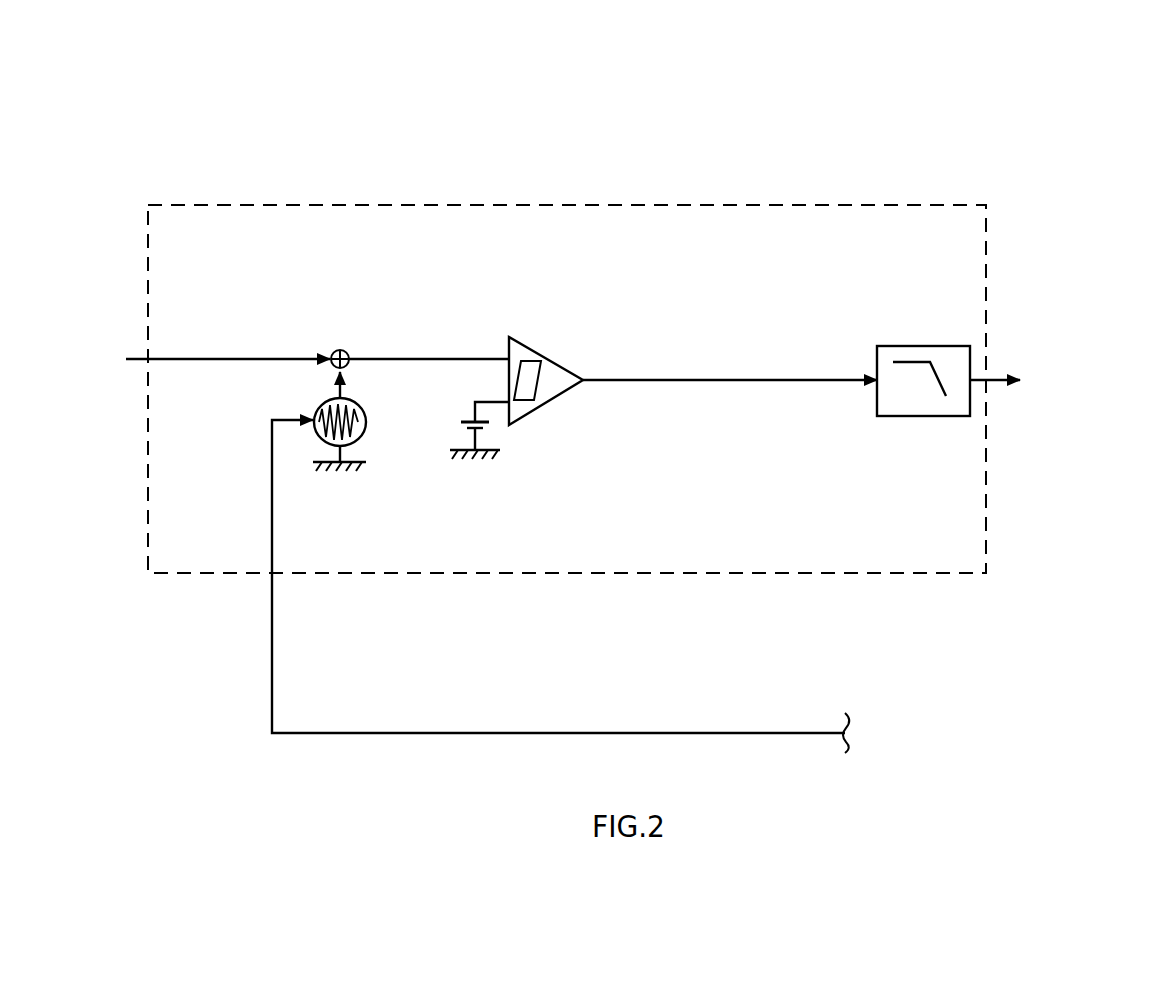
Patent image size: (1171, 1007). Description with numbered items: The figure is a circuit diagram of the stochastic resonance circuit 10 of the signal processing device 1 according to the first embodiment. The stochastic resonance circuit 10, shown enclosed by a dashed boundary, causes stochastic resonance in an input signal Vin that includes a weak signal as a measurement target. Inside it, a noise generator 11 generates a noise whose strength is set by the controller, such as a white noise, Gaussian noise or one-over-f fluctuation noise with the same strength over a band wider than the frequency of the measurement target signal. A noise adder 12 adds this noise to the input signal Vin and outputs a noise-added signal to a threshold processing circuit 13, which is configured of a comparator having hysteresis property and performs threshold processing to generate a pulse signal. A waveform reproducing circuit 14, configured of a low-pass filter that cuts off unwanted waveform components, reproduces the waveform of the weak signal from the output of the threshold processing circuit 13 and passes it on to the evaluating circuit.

The signal processing device 1 is at (1135, 74).
The stochastic resonance circuit 10 is at (470, 205).
The noise generator 11 is at (366, 426).
The noise adder 12 is at (332, 352).
The threshold processing circuit 13 is at (555, 398).
The waveform reproducing circuit 14 is at (893, 346).